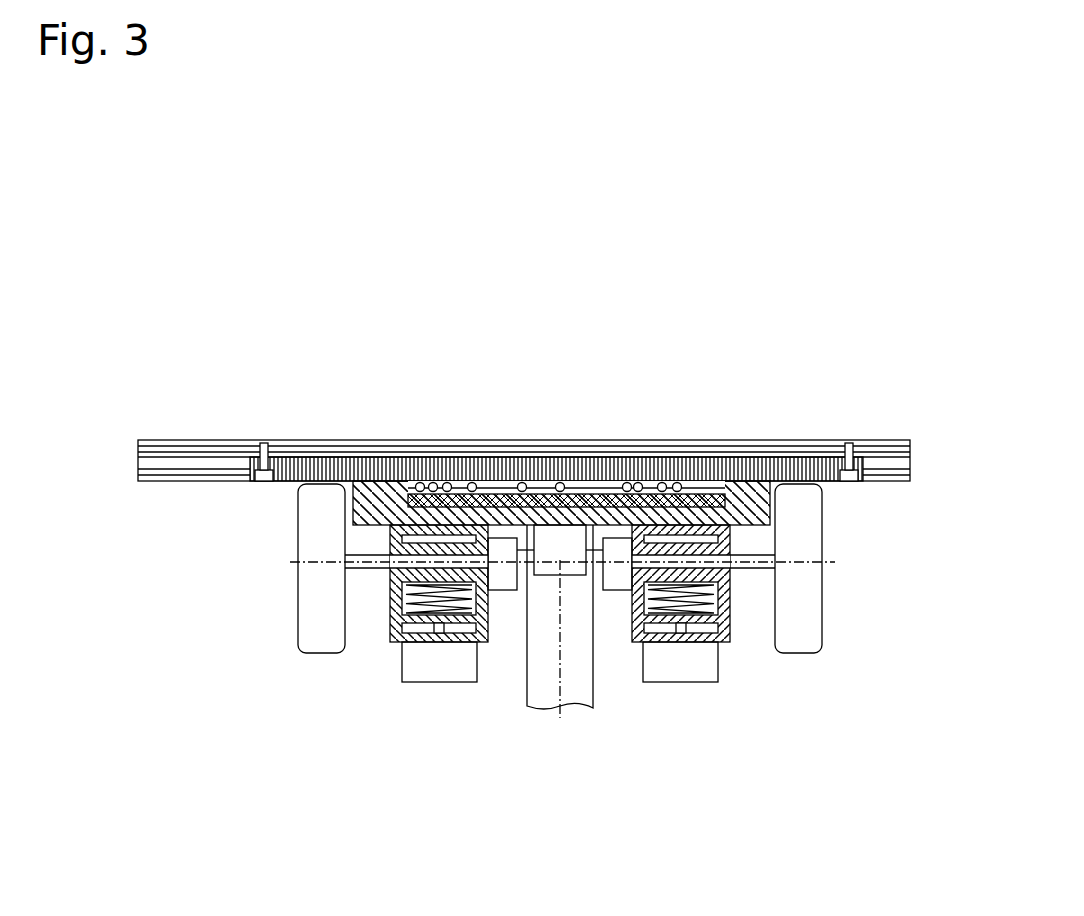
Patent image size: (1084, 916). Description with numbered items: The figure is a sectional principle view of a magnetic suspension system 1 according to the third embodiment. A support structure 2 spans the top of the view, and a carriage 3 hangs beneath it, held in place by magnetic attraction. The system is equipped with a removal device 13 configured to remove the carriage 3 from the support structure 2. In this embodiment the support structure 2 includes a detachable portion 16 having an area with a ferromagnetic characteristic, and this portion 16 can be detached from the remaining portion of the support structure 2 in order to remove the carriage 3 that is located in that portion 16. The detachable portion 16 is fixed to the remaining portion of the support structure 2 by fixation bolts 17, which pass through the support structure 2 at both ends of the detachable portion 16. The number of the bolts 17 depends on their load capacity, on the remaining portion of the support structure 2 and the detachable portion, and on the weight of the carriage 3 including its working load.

The magnetic suspension system 1 is at (572, 372).
The support structure 2 is at (888, 453).
The carriage 3 is at (450, 713).
The removal device 13 is at (365, 453).
The detachable portion 16 is at (823, 470).
The fixation bolts 17 is at (263, 447).